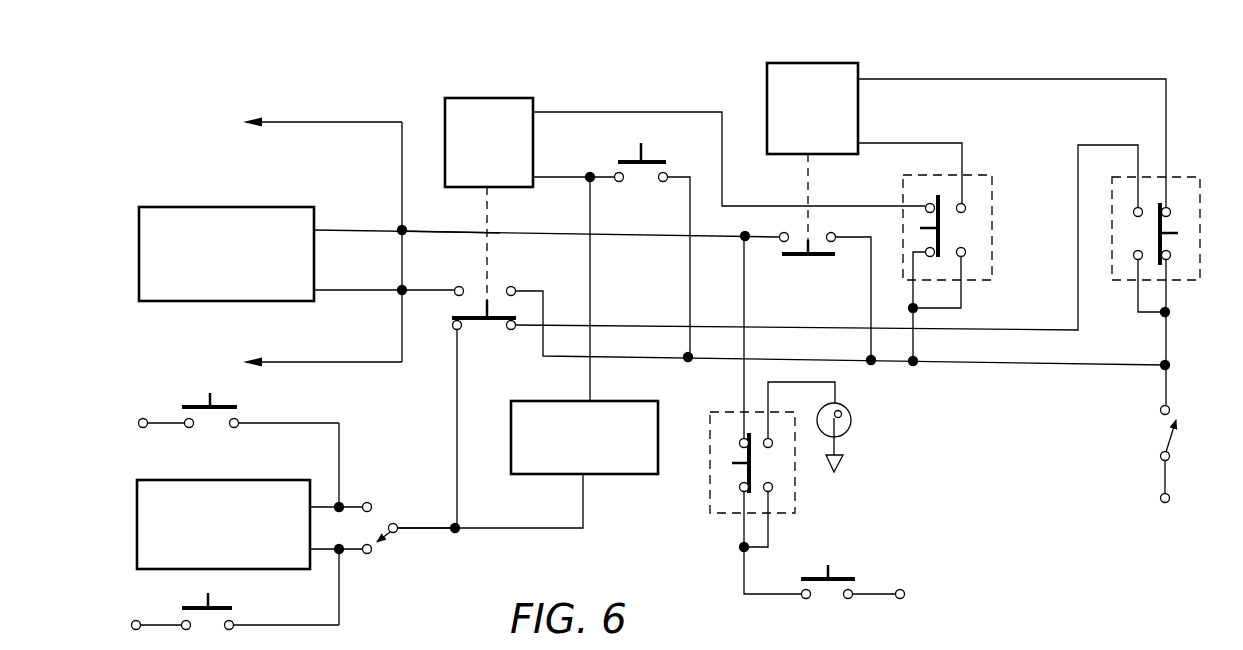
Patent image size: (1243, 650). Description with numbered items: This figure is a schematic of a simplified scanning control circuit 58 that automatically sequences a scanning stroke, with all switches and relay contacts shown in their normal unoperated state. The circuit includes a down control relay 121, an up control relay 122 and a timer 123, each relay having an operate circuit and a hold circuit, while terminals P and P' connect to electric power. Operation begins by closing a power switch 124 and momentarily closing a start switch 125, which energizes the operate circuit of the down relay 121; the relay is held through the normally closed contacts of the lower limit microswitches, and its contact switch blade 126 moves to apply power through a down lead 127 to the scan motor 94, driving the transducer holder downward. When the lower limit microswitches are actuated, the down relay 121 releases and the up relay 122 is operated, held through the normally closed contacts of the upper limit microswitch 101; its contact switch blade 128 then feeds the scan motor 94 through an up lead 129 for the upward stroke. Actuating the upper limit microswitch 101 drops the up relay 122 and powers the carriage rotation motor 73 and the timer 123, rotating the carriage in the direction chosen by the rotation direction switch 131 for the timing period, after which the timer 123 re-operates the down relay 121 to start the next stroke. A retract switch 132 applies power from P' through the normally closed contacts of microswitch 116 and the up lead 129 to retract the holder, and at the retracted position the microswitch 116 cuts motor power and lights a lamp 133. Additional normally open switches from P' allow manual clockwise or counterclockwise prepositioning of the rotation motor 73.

The scanning control circuit 58 is at (667, 46).
The scan motor 94 is at (268, 207).
The carriage rotation motor 73 is at (263, 480).
The down control relay 121 is at (492, 98).
The up control relay 122 is at (826, 63).
The timer 123 is at (607, 401).
The start switch 125 is at (645, 156).
The contact switch blade 126 is at (474, 322).
The down lead 127 is at (375, 292).
The contact switch blade 128 is at (787, 258).
The up lead 129 is at (465, 233).
The rotation direction switch 131 is at (391, 536).
The retract switch 132 is at (835, 572).
The lamp 133 is at (848, 410).
The upper limit microswitch 101 is at (1190, 177).
The microswitch 116 is at (795, 505).
The power switch 124 is at (1166, 440).